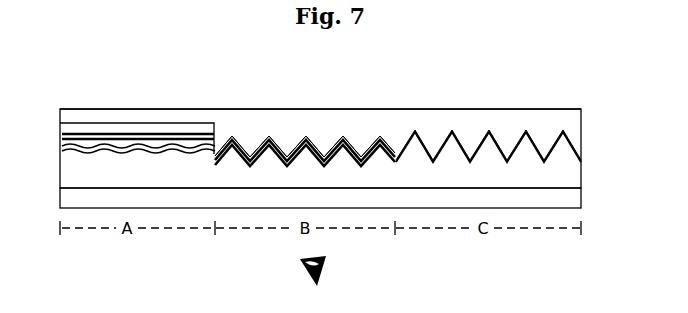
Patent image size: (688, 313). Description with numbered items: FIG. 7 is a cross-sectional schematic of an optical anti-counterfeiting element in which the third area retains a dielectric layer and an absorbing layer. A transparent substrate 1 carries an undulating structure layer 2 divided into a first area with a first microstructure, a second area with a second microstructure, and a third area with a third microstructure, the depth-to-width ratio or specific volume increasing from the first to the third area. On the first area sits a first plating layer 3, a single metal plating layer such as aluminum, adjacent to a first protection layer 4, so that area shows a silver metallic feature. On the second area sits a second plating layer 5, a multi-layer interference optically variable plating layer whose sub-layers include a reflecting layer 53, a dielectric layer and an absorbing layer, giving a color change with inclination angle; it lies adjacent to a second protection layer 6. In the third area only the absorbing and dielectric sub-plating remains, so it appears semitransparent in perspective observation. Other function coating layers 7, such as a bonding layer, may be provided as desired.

The substrate 1 is at (572, 197).
The undulating structure layer 2 is at (572, 165).
The first plating layer 3 is at (66, 150).
The first protection layer 4 is at (64, 142).
The second plating layer 5 is at (301, 114).
The reflecting layer 53 is at (237, 148).
The second protection layer 6 is at (330, 146).
The other function coating layers 7 is at (572, 123).